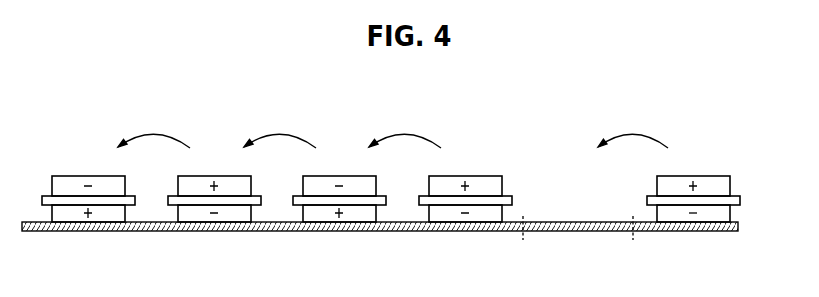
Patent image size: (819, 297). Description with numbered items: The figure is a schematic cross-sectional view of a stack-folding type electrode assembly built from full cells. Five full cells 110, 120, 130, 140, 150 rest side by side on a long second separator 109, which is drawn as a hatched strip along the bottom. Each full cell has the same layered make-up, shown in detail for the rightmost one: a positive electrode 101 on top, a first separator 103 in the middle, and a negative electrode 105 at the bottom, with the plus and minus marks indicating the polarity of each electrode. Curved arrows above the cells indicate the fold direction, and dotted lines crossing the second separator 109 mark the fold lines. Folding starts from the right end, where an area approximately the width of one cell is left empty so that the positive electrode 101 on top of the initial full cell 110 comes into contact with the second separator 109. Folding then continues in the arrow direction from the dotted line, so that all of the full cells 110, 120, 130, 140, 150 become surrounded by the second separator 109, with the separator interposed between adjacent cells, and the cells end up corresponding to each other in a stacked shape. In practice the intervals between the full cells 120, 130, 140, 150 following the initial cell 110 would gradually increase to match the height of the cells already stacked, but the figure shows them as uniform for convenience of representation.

The full cell 110 is at (720, 166).
The full cell 120 is at (469, 152).
The full cell 130 is at (343, 152).
The full cell 140 is at (218, 152).
The full cell 150 is at (93, 152).
The positive electrode 101 is at (730, 188).
The first separator 103 is at (740, 200).
The negative electrode 105 is at (730, 215).
The second separator 109 is at (720, 233).